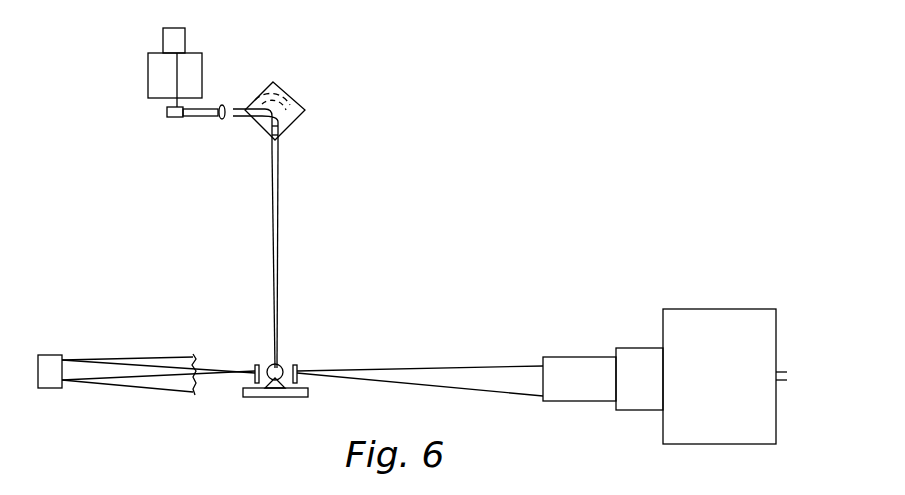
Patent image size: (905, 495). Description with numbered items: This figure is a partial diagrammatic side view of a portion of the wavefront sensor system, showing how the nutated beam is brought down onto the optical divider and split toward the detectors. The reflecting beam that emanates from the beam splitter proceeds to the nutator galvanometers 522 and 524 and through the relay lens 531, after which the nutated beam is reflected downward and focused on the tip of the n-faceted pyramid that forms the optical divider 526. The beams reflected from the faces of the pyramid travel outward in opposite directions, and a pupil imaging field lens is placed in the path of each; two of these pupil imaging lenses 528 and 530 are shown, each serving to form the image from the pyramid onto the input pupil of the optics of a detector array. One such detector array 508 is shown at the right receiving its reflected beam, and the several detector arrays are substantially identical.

The nutator galvanometer 524 is at (200, 53).
The relay lens 531 is at (210, 103).
The nutator galvanometer 522 is at (286, 92).
The pupil imaging lens 528 is at (258, 365).
The pupil imaging lens 530 is at (295, 365).
The optical divider 526 is at (265, 398).
The detector array 508 is at (700, 309).